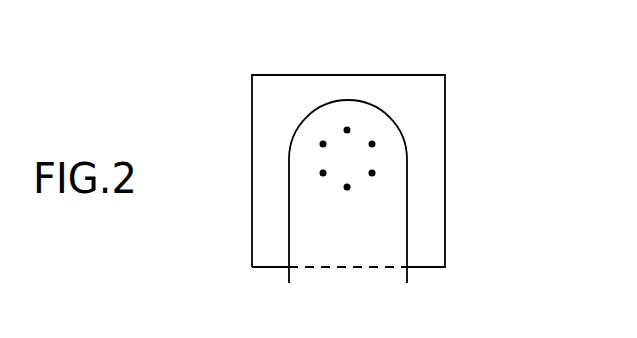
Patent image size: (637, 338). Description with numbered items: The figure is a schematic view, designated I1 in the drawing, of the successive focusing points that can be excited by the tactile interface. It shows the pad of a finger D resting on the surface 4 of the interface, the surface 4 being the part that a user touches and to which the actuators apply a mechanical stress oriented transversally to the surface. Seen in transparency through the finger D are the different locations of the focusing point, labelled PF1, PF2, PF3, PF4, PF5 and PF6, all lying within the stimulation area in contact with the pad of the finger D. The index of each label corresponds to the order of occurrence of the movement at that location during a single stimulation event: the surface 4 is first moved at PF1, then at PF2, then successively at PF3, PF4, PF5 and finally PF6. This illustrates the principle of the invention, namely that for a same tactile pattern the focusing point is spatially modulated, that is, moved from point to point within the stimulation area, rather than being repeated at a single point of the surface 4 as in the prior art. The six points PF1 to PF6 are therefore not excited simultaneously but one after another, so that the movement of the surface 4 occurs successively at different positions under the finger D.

The image I1 is at (242, 56).
The surface 4 is at (428, 88).
The finger D is at (393, 231).
The focusing point PF1 is at (372, 144).
The focusing point PF2 is at (323, 173).
The focusing point PF3 is at (372, 173).
The focusing point PF4 is at (323, 144).
The focusing point PF5 is at (347, 188).
The focusing point PF6 is at (347, 130).